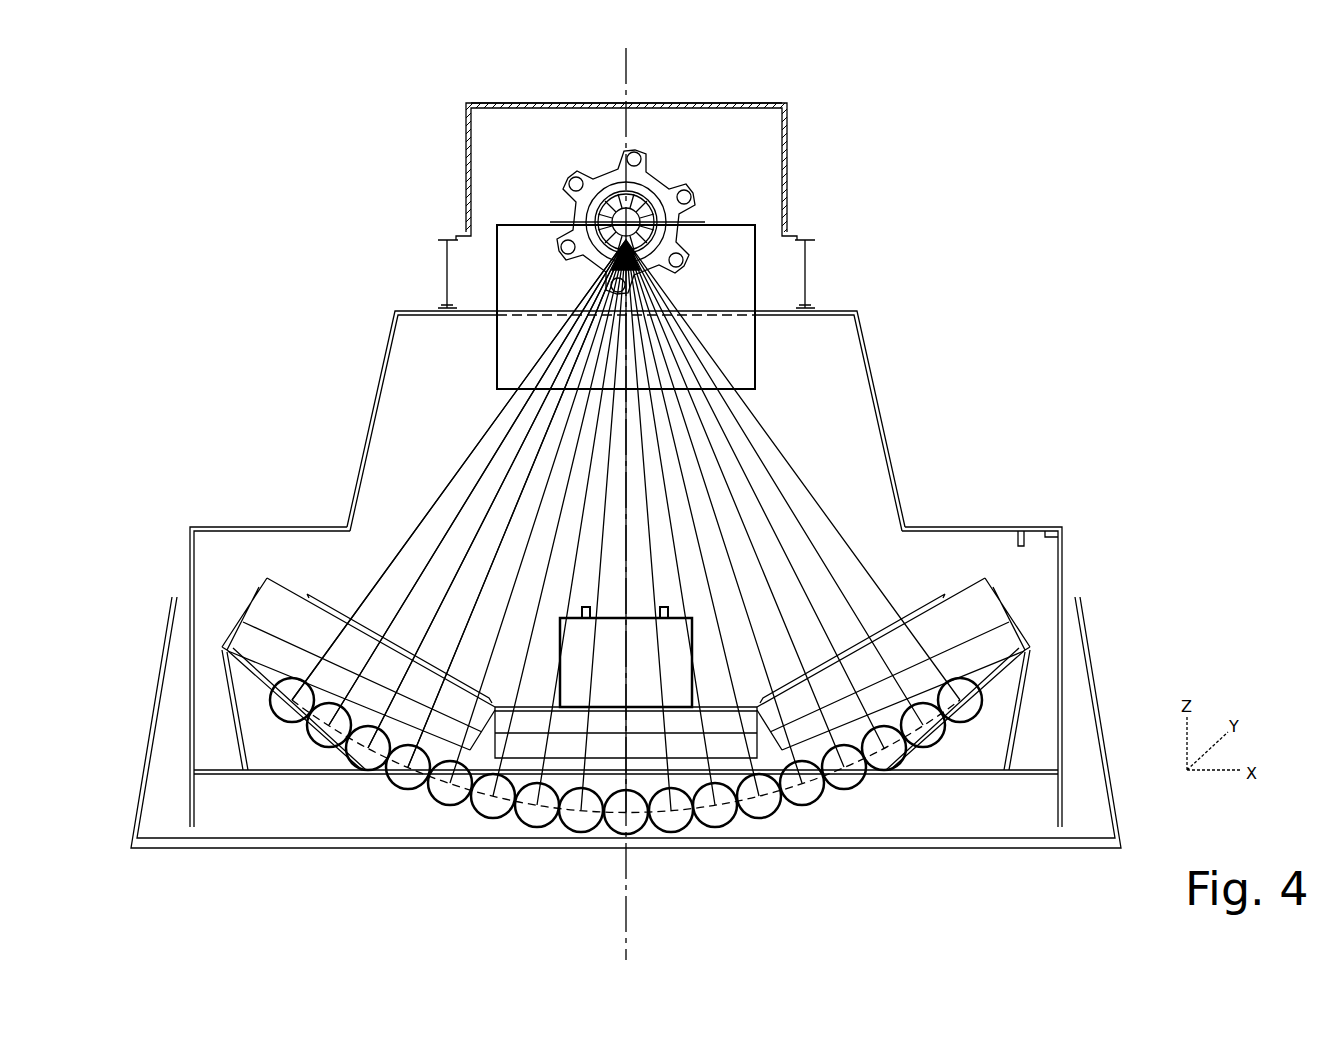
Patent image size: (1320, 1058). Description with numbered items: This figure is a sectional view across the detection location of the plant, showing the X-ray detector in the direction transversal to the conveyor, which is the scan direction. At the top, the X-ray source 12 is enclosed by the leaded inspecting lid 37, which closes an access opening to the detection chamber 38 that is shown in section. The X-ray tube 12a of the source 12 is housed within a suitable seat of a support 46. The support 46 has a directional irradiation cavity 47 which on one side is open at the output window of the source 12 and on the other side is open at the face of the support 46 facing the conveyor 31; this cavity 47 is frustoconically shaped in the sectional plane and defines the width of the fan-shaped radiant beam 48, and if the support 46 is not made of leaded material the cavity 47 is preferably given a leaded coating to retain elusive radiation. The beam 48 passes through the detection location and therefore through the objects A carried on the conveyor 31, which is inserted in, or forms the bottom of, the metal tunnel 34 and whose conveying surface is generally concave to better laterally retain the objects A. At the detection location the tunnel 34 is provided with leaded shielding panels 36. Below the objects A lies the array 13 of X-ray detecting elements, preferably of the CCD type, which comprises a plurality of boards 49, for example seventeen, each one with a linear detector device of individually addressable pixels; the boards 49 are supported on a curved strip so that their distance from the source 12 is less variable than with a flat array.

The X-ray source 12 is at (748, 161).
The X-ray tube 12a is at (590, 178).
The array of X-ray detecting elements 13 is at (977, 667).
The conveyor 31 is at (242, 586).
The metal tunnel 34 is at (198, 525).
The leaded shielding panels 36 is at (935, 843).
The leaded inspecting lid 37 is at (742, 102).
The detection chamber 38 is at (818, 365).
The support 46 is at (513, 242).
The directional irradiation cavity 47 is at (560, 340).
The fan-shaped radiant beam 48 is at (475, 562).
The boards 49 is at (762, 808).
The objects A is at (667, 643).